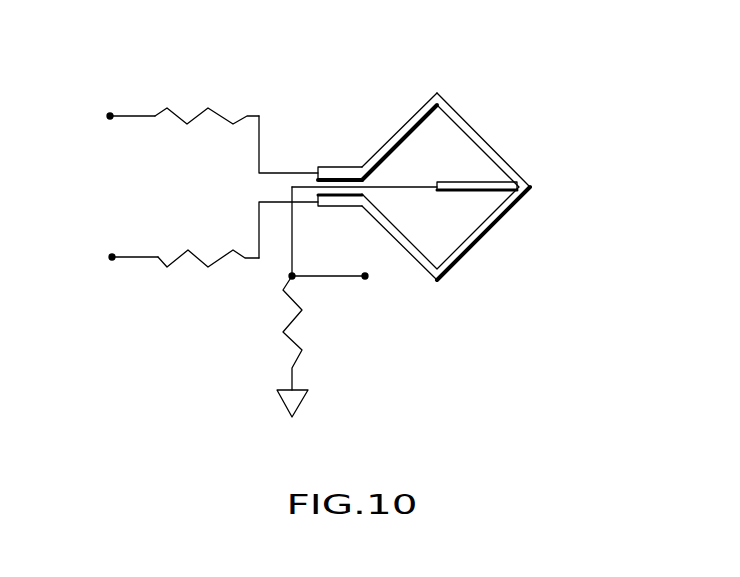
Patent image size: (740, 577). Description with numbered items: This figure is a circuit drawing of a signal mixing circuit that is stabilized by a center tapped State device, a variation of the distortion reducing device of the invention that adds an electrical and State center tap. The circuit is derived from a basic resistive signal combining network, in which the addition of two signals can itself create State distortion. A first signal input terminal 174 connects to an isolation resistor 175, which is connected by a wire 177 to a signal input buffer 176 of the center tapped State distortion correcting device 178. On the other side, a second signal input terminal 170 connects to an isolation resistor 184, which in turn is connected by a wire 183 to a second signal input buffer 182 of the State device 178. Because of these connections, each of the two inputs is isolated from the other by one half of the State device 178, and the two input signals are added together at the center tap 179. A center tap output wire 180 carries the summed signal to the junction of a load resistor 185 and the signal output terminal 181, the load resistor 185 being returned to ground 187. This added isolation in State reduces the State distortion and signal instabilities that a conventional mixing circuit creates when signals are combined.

The input terminal 170 is at (110, 263).
The first signal input terminal 174 is at (108, 110).
The isolation resistor 175 is at (180, 112).
The signal input buffer 176 is at (338, 158).
The wire 177 is at (263, 135).
The center tapped State distortion correcting device 178 is at (487, 137).
The center tap 179 is at (462, 193).
The center tap output wire 180 is at (410, 167).
The signal output terminal 181 is at (368, 288).
The signal input buffer 182 is at (342, 213).
The wire 183 is at (258, 227).
The isolation resistor 184 is at (205, 270).
The resistor 185 is at (303, 332).
The ground 187 is at (283, 405).